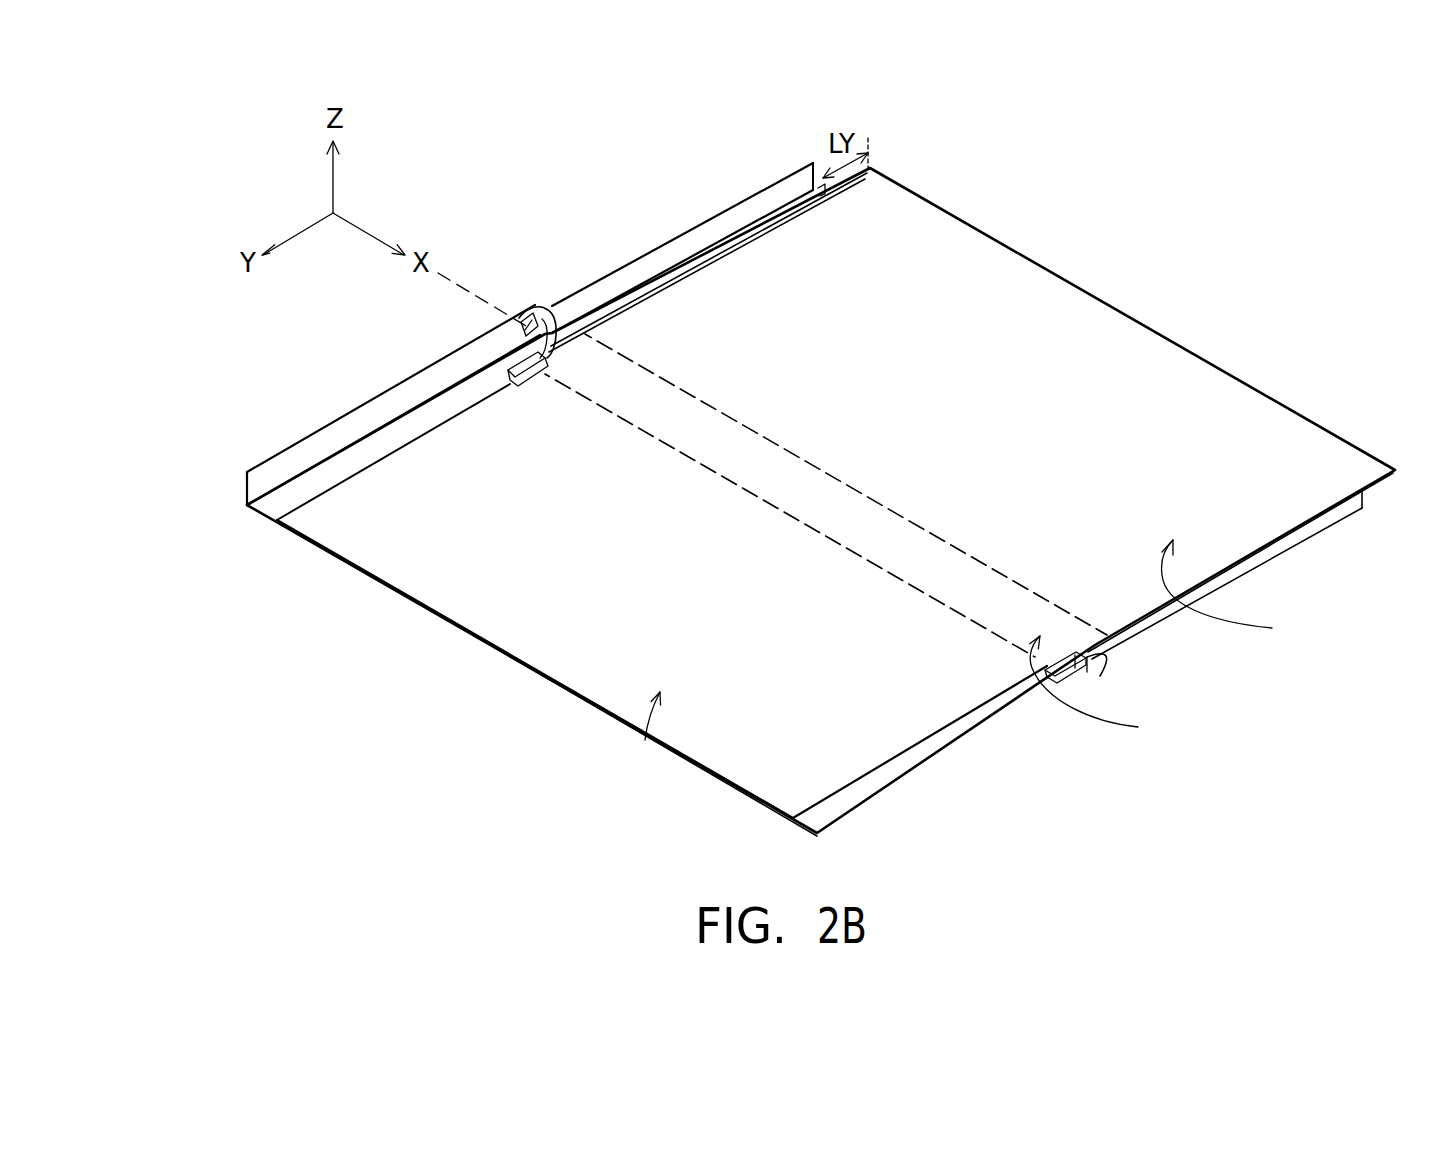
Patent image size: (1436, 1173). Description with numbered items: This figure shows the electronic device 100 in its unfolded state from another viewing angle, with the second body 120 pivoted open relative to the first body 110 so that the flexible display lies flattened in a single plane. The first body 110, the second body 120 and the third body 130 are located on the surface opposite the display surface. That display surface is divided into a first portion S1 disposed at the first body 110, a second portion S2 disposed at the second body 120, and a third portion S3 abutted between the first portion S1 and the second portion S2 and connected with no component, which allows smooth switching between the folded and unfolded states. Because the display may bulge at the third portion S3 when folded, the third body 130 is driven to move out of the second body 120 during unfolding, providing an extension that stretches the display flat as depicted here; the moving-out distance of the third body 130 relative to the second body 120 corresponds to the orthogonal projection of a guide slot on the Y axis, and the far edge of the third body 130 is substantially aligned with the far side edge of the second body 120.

The electronic device 100 is at (1412, 881).
The first body 110 is at (293, 457).
The second body 120 is at (735, 216).
The third body 130 is at (873, 167).
The first portion S1 is at (646, 762).
The second portion S2 is at (1233, 595).
The third portion S3 is at (1100, 690).